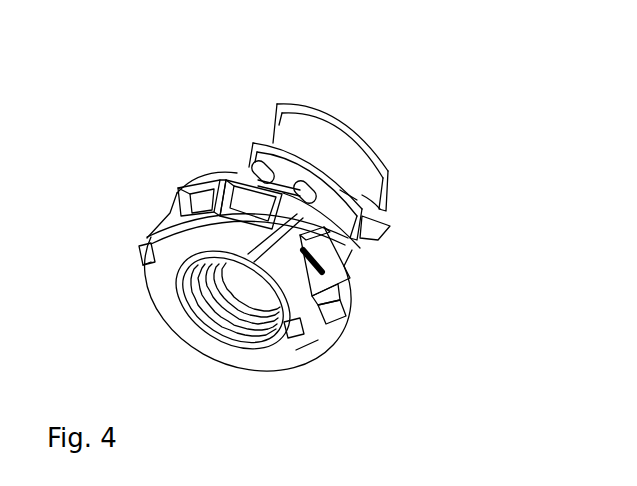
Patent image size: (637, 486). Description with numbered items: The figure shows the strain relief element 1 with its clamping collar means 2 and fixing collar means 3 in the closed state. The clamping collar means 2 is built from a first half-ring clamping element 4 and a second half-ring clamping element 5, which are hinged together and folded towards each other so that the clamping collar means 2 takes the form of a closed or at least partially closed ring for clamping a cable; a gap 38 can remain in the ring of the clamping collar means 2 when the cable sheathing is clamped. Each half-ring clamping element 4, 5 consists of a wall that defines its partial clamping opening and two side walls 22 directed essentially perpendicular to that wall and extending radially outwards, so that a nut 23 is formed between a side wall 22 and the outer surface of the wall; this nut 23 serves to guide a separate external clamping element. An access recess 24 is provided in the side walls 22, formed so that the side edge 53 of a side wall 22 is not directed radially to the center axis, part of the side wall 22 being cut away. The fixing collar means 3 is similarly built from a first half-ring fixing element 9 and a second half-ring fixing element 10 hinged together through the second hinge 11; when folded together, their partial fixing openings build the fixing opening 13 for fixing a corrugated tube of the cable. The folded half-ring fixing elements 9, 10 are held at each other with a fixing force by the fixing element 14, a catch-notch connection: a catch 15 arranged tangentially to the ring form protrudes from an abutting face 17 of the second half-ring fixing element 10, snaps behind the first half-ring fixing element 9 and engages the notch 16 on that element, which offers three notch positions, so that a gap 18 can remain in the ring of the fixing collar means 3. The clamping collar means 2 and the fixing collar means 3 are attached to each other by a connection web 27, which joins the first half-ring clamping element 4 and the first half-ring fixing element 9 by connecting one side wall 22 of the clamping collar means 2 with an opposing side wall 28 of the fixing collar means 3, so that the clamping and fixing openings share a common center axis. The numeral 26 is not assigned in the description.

The strain relief element 1 is at (349, 130).
The clamping collar means 2 is at (412, 166).
The fixing collar means 3 is at (264, 254).
The first half-ring clamping element 4 is at (324, 105).
The second half-ring clamping element 5 is at (375, 276).
The first half-ring fixing element 9 is at (174, 185).
The second half-ring fixing element 10 is at (144, 301).
The second hinge 11 is at (148, 251).
The fixing opening 13 is at (205, 318).
The fixing element 14 is at (347, 323).
The catch 15 is at (328, 322).
The notch 16 is at (323, 270).
The abutting face 17 is at (309, 356).
The gap 18 is at (287, 343).
The side wall 22 is at (284, 168).
The nut 23 is at (359, 185).
The access recess 24 is at (236, 142).
The notch 26 is at (146, 257).
The connection web 27 is at (245, 172).
The side wall of the fixing collar means 28 is at (262, 185).
The gap in the ring of the clamping collar means 38 is at (385, 225).
The side edge of the side wall 53 is at (257, 152).